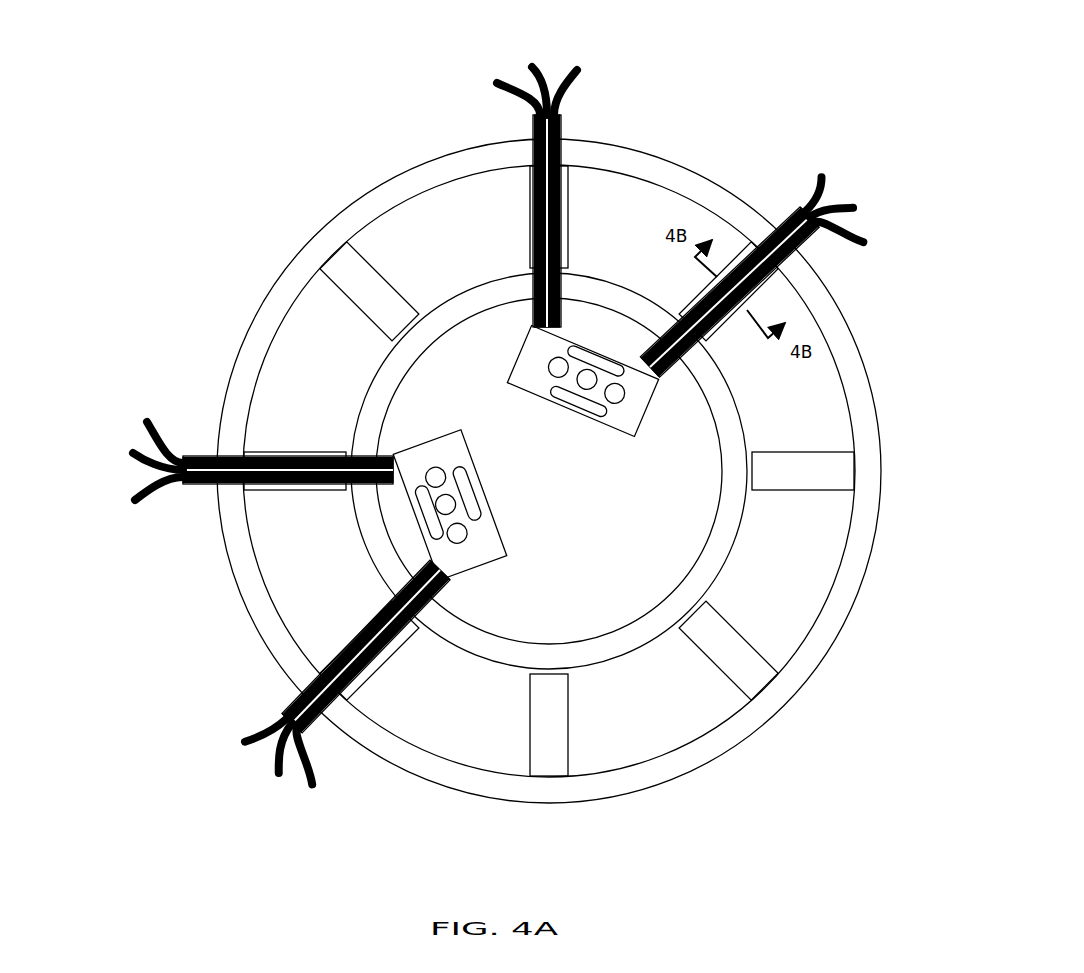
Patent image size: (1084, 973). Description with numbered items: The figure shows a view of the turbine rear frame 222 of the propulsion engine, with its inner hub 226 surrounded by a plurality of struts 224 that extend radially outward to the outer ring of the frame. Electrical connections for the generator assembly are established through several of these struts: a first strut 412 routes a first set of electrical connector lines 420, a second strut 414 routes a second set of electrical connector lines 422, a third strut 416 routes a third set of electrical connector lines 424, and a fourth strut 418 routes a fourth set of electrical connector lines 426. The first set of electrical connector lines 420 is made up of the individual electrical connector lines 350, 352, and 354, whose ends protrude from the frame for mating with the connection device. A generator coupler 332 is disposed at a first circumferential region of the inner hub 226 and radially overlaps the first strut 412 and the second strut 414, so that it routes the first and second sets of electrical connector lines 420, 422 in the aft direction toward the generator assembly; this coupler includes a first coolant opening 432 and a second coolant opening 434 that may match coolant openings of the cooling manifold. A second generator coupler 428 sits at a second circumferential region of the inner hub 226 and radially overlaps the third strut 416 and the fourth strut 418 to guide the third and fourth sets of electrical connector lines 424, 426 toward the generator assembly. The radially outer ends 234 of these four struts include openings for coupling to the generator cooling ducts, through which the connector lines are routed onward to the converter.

The turbine rear frame 222 is at (678, 152).
The radially outer ends 234 is at (333, 250).
The inner hub 226 is at (622, 628).
The plurality of struts 224 is at (388, 285).
The second strut 414 is at (570, 215).
The first strut 412 is at (718, 332).
The third strut 416 is at (303, 452).
The fourth strut 418 is at (348, 640).
The generator coupler 332 is at (644, 424).
The first coolant opening 432 is at (533, 340).
The second coolant opening 434 is at (563, 406).
The second generator coupler 428 is at (495, 523).
The second set of electrical connector lines 422 is at (578, 48).
The first set of electrical connector lines 420 is at (801, 244).
The electrical connector line 354 is at (818, 170).
The electrical connector line 352 is at (855, 206).
The electrical connector line 350 is at (872, 244).
The third set of electrical connector lines 424 is at (117, 420).
The fourth set of electrical connector lines 426 is at (233, 722).